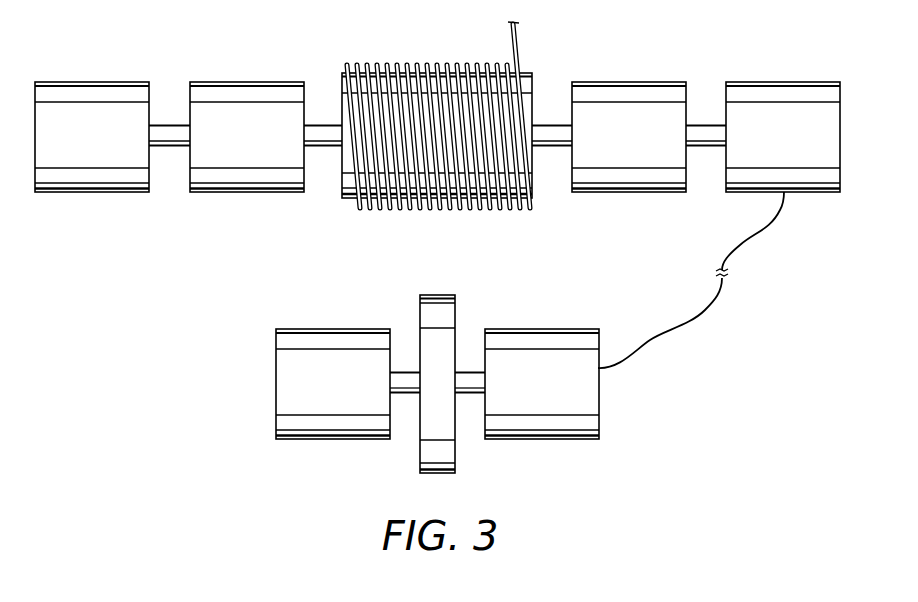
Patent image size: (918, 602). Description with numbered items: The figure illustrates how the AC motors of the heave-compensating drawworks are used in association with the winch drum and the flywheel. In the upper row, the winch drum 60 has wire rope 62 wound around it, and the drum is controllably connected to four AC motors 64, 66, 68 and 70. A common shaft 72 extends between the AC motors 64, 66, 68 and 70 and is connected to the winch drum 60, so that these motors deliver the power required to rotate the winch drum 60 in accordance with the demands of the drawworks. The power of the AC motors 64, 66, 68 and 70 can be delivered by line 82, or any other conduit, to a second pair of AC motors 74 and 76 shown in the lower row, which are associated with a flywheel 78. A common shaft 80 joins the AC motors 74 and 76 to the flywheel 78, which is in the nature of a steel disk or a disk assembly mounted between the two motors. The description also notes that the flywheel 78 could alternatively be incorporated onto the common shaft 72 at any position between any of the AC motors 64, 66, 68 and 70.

The winch drum 60 is at (408, 63).
The wire rope 62 is at (517, 45).
The AC motor 64 is at (113, 82).
The AC motor 66 is at (254, 82).
The AC motor 68 is at (647, 82).
The AC motor 70 is at (789, 82).
The common shaft 72 is at (174, 147).
The AC motor 74 is at (302, 329).
The AC motor 76 is at (553, 329).
The flywheel 78 is at (420, 296).
The common shaft 80 is at (407, 394).
The line 82 is at (688, 330).